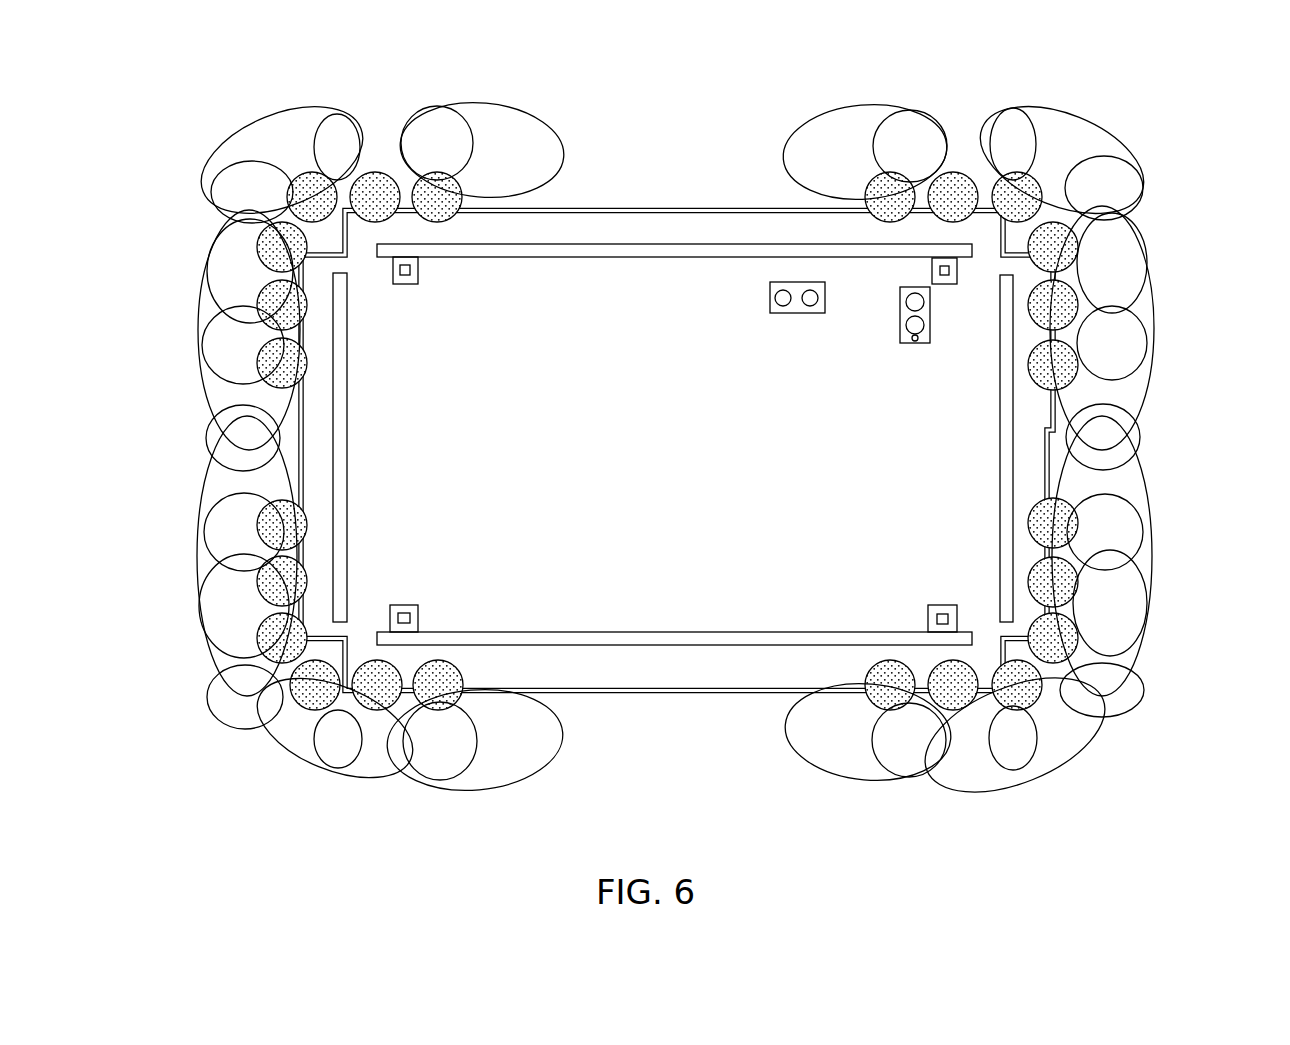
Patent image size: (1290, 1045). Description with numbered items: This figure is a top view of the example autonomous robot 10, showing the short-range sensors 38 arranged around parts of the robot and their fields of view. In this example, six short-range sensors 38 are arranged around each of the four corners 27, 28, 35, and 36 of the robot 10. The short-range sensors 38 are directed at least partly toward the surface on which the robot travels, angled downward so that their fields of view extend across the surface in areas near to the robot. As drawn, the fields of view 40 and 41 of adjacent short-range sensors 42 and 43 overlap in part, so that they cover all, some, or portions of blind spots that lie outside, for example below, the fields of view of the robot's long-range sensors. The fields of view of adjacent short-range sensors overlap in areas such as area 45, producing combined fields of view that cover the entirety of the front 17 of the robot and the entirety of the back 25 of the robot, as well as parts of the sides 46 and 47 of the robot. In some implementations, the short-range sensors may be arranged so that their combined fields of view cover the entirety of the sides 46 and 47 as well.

The robot 10 is at (699, 454).
The front 17 is at (1152, 407).
The back 25 is at (128, 406).
The corner 27 is at (1208, 108).
The corner 28 is at (335, 719).
The corner 35 is at (1195, 744).
The corner 36 is at (350, 144).
The short-range sensors 38 is at (358, 278).
The field of view 40 is at (395, 792).
The field of view 41 is at (487, 782).
The short-range sensor 42 is at (440, 680).
The short-range sensor 43 is at (368, 665).
The area 45 is at (332, 128).
The side 46 is at (657, 207).
The side 47 is at (688, 694).